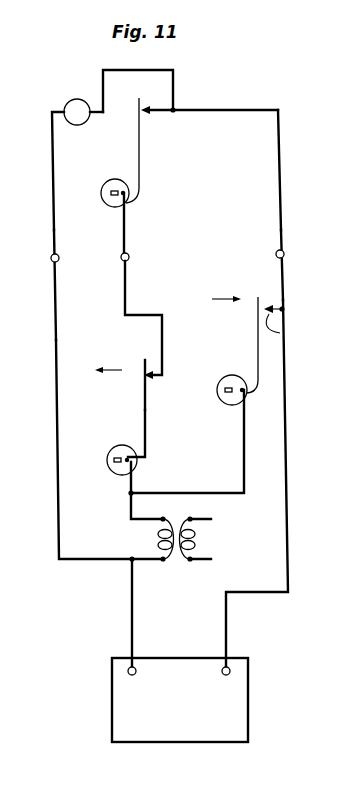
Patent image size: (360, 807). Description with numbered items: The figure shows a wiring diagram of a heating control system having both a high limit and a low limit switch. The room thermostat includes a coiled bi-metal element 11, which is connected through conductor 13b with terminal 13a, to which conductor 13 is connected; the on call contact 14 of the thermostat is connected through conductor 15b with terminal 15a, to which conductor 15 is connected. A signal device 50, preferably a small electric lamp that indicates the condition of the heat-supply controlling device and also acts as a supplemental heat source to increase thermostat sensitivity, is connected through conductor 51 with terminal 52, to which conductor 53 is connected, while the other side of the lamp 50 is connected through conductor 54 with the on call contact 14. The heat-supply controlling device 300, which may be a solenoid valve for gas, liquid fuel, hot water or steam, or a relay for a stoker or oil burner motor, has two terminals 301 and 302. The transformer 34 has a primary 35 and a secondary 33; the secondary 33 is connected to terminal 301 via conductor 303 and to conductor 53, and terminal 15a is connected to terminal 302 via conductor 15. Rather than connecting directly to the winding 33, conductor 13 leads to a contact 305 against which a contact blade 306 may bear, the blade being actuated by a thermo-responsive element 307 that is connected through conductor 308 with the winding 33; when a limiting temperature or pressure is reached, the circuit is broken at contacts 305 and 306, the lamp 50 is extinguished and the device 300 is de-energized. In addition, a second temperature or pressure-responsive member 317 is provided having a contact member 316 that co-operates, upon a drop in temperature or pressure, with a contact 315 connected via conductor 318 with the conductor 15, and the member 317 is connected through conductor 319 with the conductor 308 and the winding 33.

The coiled bi-metal element 11 is at (140, 166).
The conductor 13 is at (124, 296).
The terminal 13a is at (130, 256).
The conductor 13b is at (123, 236).
The on call contact 14 is at (144, 113).
The conductor 15 is at (284, 398).
The terminal 15a is at (285, 252).
The conductor 15b is at (279, 130).
The transformer secondary 33 is at (160, 532).
The transformer 34 is at (175, 528).
The transformer primary 35 is at (195, 538).
The signal device 50 is at (83, 112).
The conductor 51 is at (52, 170).
The terminal 52 is at (51, 260).
The conductor 53 is at (54, 350).
The conductor 54 is at (150, 70).
The heat-supply controlling device 300 is at (189, 714).
The terminal 301 is at (128, 672).
The terminal 302 is at (232, 672).
The conductor 303 is at (132, 612).
The contact 305 is at (148, 378).
The contact blade 306 is at (147, 430).
The thermo-responsive element 307 is at (107, 459).
The conductor 308 is at (128, 484).
The contact 315 is at (280, 333).
The contact member 316 is at (258, 335).
The temperature or pressure-responsive member 317 is at (232, 375).
The conductor 318 is at (286, 307).
The conductor 319 is at (246, 438).